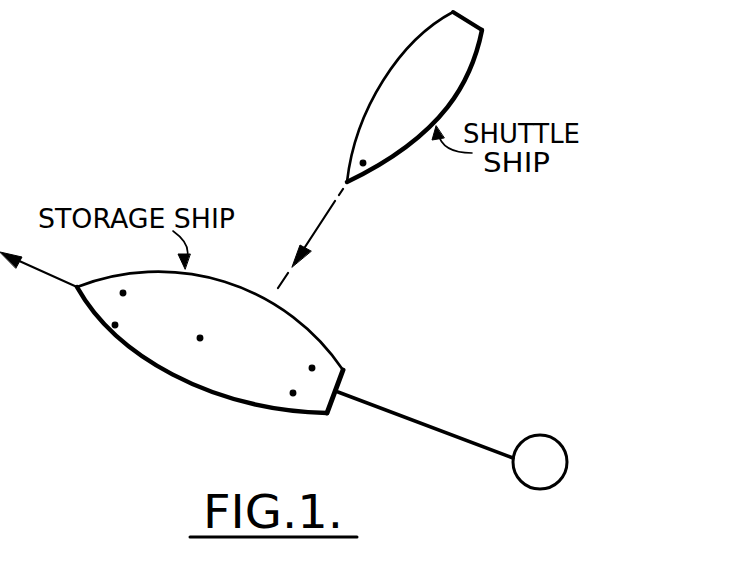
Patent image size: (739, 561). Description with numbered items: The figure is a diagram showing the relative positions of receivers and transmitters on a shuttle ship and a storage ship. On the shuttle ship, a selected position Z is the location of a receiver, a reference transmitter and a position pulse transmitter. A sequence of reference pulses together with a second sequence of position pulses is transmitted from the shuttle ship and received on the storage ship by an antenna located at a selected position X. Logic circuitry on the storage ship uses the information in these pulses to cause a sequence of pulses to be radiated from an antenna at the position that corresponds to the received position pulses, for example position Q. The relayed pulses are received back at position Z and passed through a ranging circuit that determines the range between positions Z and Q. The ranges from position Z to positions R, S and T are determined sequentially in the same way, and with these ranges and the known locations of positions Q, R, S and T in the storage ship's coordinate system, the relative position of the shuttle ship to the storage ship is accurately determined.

The position Q is at (123, 293).
The position T is at (115, 325).
The position X is at (200, 338).
The position R is at (312, 368).
The position S is at (293, 393).
The position Z is at (363, 163).